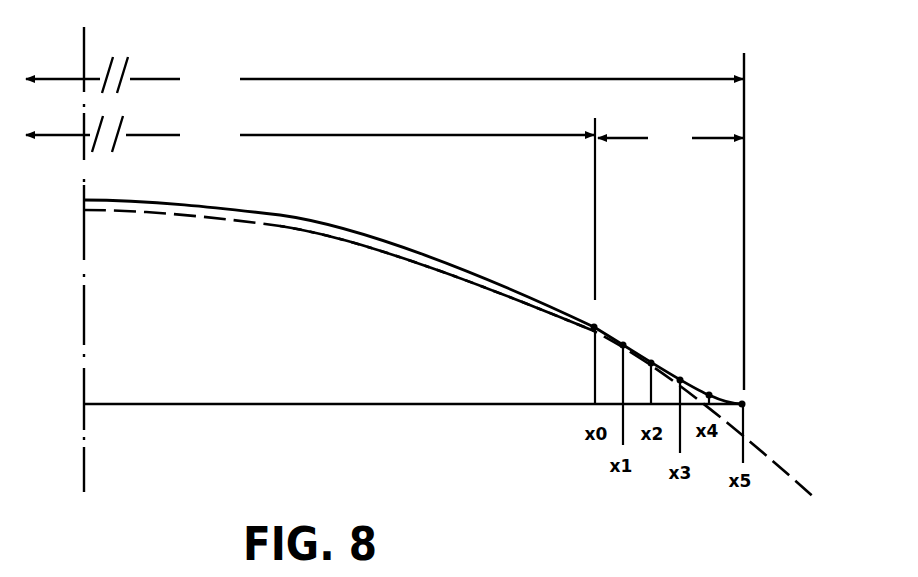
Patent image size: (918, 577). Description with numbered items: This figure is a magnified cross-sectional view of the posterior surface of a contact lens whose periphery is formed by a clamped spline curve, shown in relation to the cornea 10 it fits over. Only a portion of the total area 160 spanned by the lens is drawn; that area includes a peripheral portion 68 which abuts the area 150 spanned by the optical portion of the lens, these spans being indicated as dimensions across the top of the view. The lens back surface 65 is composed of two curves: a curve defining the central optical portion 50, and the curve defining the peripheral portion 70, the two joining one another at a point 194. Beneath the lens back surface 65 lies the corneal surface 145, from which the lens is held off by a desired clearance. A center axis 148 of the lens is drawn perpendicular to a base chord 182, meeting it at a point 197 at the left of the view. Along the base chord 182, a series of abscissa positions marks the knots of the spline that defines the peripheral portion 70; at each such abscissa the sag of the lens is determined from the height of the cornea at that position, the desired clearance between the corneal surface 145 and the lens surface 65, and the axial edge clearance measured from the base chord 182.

The cornea 10 is at (217, 316).
The central optical portion 50 is at (183, 197).
The lens back surface 65 is at (163, 212).
The peripheral portion 68 is at (670, 138).
The peripheral portion curve 70 is at (676, 360).
The corneal surface 145 is at (295, 230).
The center axis 148 is at (86, 457).
The area spanned by the optical portion 150 is at (310, 134).
The area spanned by the lens 160 is at (384, 75).
The base chord 182 is at (277, 405).
The junction point 194 is at (598, 325).
The intersection point 197 is at (86, 398).